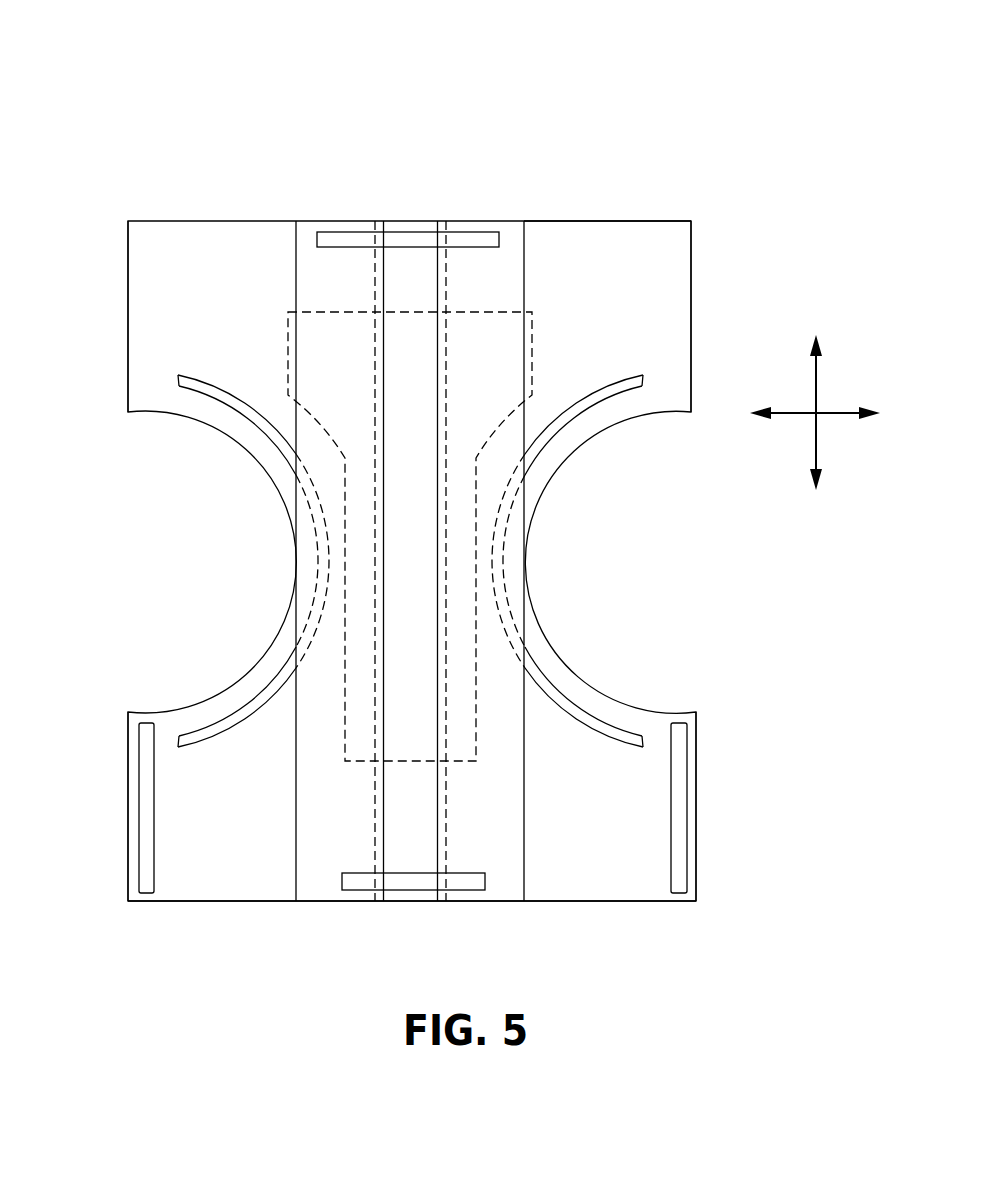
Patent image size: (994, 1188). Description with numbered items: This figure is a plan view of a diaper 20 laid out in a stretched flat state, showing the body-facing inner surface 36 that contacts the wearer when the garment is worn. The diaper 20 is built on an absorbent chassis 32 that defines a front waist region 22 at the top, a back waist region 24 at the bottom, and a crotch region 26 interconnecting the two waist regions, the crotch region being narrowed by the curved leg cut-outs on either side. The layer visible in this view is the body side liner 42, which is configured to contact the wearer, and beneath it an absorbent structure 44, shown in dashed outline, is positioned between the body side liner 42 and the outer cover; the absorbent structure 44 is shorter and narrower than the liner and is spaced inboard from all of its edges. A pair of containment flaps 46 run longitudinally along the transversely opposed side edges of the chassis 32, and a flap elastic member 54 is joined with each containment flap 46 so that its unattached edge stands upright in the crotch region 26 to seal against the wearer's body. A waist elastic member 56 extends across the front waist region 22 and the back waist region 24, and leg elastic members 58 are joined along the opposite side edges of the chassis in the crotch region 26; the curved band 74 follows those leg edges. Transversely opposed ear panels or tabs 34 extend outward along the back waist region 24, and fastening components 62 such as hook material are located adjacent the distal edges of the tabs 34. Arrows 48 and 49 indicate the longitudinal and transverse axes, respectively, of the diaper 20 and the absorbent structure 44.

The diaper 20 is at (721, 96).
The front waist region 22 is at (628, 245).
The back waist region 24 is at (638, 833).
The crotch region 26 is at (505, 545).
The absorbent chassis 32 is at (150, 352).
The ear panels or tabs 34 is at (138, 835).
The body-facing inner surface 36 is at (667, 270).
The body side liner 42 is at (398, 843).
The absorbent structure 44 is at (535, 337).
The containment flaps 46 is at (315, 273).
The longitudinal axis arrow 48 is at (816, 378).
The transverse axis arrow 49 is at (840, 415).
The flap elastic member 54 is at (382, 672).
The waist elastic member 56 is at (400, 242).
The leg elastic members 58 is at (207, 728).
The fastening components 62 is at (148, 777).
The elasticized leg cuff 74 is at (562, 647).